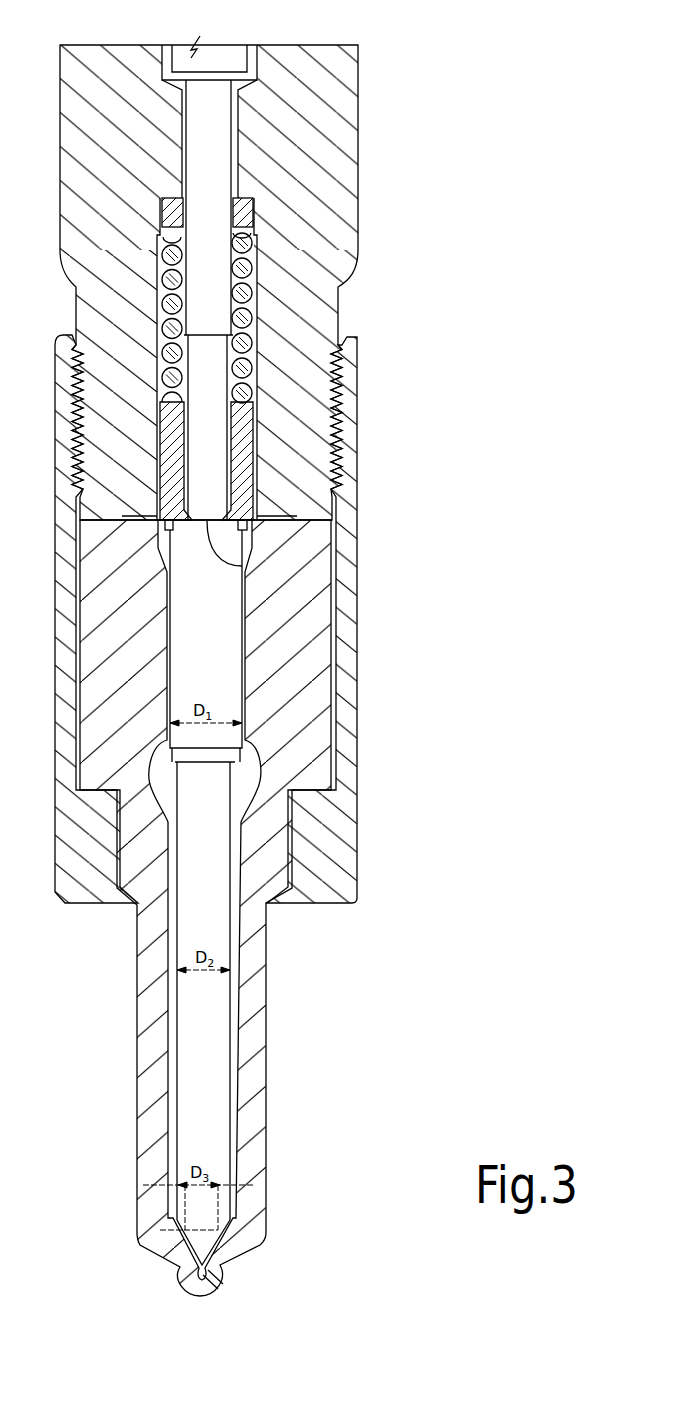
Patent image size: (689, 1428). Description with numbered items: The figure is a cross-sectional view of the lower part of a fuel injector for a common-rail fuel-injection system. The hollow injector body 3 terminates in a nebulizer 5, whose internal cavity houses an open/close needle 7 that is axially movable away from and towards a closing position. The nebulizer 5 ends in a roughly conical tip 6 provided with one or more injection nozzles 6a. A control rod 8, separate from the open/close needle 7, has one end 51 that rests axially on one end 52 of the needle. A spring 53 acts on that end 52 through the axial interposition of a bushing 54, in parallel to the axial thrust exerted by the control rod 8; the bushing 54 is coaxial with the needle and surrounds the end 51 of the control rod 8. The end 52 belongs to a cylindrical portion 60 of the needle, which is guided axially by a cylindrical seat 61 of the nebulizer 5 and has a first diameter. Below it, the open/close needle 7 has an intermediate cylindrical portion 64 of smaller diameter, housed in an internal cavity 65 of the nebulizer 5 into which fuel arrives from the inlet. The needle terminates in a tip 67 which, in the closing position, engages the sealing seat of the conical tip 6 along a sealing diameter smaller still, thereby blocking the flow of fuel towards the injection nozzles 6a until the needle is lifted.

The injector body 3 is at (342, 158).
The nebulizer 5 is at (307, 770).
The tip 6 is at (240, 1243).
The injection nozzles 6a is at (223, 1273).
The open/close needle 7 is at (227, 662).
The control rod 8 is at (202, 108).
The end of the control rod 51 is at (235, 453).
The end of the open/close needle 52 is at (230, 567).
The spring 53 is at (240, 262).
The bushing 54 is at (255, 408).
The cylindrical portion 60 is at (203, 613).
The cylindrical seat 61 is at (247, 707).
The intermediate cylindrical portion 64 is at (212, 997).
The internal cavity 65 is at (243, 923).
The tip of the open/close needle 67 is at (230, 1230).